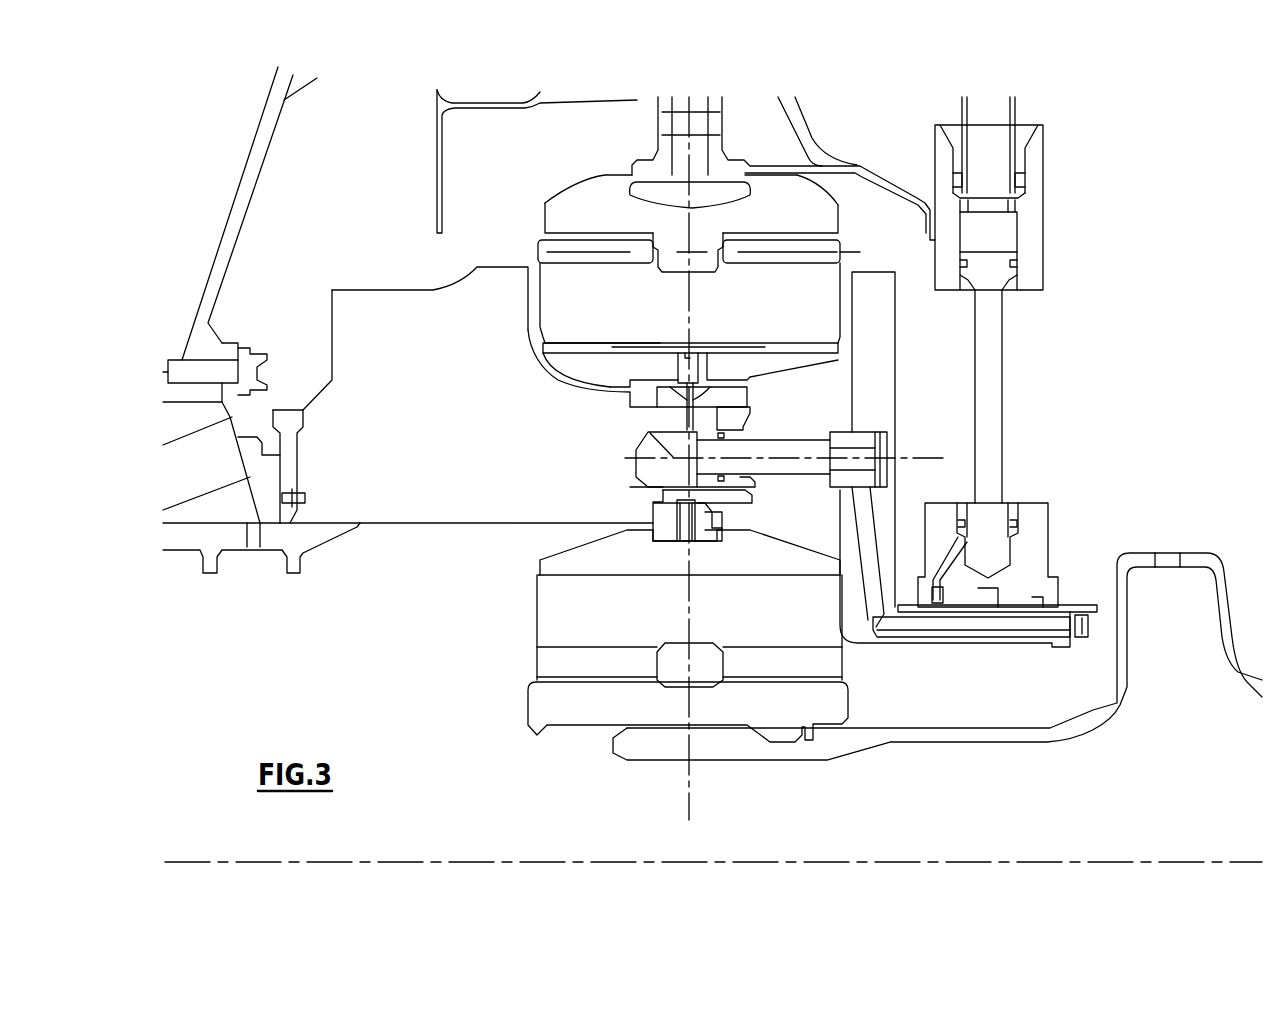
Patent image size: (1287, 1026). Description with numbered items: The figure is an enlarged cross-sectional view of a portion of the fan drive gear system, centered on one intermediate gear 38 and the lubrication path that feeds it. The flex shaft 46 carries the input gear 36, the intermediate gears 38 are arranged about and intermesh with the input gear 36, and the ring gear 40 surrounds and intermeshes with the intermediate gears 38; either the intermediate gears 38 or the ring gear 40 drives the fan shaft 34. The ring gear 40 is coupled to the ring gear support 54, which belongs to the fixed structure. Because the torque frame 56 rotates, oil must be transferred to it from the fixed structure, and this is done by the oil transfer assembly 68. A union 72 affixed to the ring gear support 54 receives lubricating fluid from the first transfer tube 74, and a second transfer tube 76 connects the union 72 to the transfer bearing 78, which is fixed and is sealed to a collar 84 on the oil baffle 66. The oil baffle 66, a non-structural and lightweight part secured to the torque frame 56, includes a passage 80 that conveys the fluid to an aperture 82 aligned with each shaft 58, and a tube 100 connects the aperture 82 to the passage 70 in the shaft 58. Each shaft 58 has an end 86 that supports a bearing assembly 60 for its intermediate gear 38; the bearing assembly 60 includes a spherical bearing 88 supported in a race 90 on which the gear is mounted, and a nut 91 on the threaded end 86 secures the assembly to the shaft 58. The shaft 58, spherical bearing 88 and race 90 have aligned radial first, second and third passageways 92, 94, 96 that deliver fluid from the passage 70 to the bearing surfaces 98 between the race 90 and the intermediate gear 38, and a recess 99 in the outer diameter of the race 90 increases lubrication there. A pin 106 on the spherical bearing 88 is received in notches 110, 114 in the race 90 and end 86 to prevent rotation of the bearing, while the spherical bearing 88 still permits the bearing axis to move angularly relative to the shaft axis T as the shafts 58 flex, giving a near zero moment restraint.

The fan shaft 34 is at (187, 505).
The input gear 36 is at (547, 707).
The intermediate gears 38 is at (550, 603).
The ring gear 40 is at (797, 220).
The flex shaft 46 is at (852, 740).
The ring gear support 54 is at (758, 138).
The torque frame 56 is at (438, 535).
The shaft 58 is at (630, 410).
The bearing assembly 60 is at (786, 548).
The oil baffle 66 is at (883, 387).
The oil transfer assembly 68 is at (1053, 349).
The passage 70 is at (645, 448).
The union 72 is at (1032, 220).
The first transfer tube 74 is at (1013, 120).
The second transfer tube 76 is at (1003, 343).
The transfer bearing 78 is at (1060, 550).
The passage 80 is at (998, 630).
The aperture 82 is at (882, 452).
The collar 84 is at (953, 640).
The end 86 is at (750, 415).
The spherical bearing 88 is at (672, 523).
The race 90 is at (750, 563).
The nut 91 is at (730, 400).
The first passageway 92 is at (697, 413).
The second passageway 94 is at (688, 400).
The third passageway 96 is at (683, 355).
The bearing surfaces 98 is at (658, 332).
The recess 99 is at (630, 353).
The tube 100 is at (832, 433).
The pin 106 is at (720, 527).
The notch 110 is at (640, 537).
The notch 114 is at (663, 493).
The shaft axis T is at (650, 427).